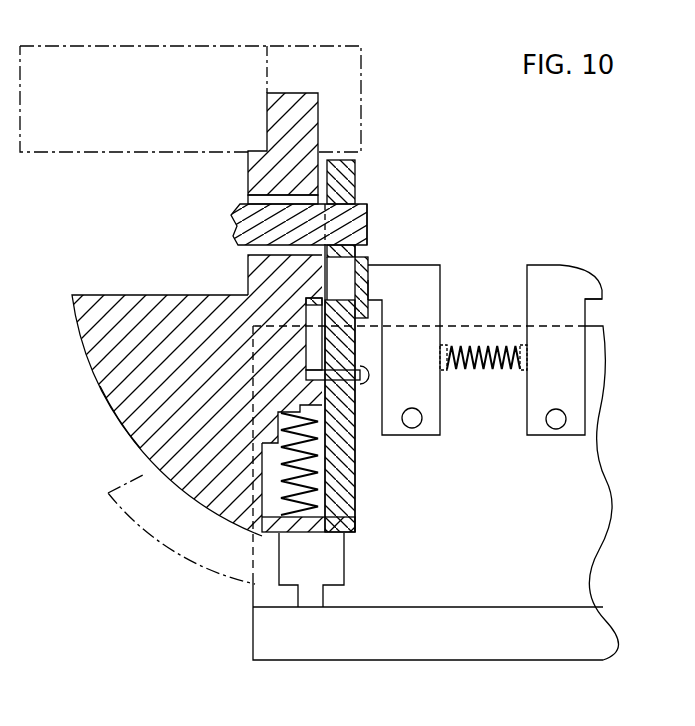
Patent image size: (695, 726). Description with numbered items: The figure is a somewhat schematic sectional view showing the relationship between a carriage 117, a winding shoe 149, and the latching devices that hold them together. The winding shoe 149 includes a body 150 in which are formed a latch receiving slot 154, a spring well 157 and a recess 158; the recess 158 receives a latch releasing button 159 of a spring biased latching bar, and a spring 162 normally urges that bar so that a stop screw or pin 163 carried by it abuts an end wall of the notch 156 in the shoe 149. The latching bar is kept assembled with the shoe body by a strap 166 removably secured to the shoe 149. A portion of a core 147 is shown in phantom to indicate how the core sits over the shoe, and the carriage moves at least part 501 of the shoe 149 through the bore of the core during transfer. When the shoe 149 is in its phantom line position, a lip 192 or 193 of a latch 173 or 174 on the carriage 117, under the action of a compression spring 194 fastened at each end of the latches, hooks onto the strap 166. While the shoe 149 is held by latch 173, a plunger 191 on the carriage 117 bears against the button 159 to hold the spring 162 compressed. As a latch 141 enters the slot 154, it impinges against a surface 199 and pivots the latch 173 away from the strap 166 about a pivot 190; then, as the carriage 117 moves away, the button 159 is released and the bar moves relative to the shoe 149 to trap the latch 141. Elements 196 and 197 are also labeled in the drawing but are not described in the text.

The core 147 is at (96, 46).
The part of shoe 501 is at (266, 92).
The latch receiving slot 154 is at (264, 197).
The latch 141 is at (242, 228).
The bushing 196 is at (371, 205).
The collar 197 is at (370, 219).
The strap 166 is at (368, 274).
The lip 192 is at (381, 306).
The surface 199 is at (371, 290).
The latch 173 is at (421, 268).
The pivot 190 is at (416, 428).
The latch 174 is at (559, 278).
The lip 193 is at (598, 303).
The compression spring 194 is at (485, 372).
The carriage 117 is at (602, 554).
The plunger 191 is at (346, 561).
The latch releasing button 159 is at (262, 553).
The recess 158 is at (262, 507).
The spring 162 is at (318, 489).
The body 150 is at (138, 297).
The winding shoe 149 is at (125, 441).
The notch 156 is at (306, 301).
The stop screw or pin 163 is at (345, 367).
The spring well 157 is at (328, 402).